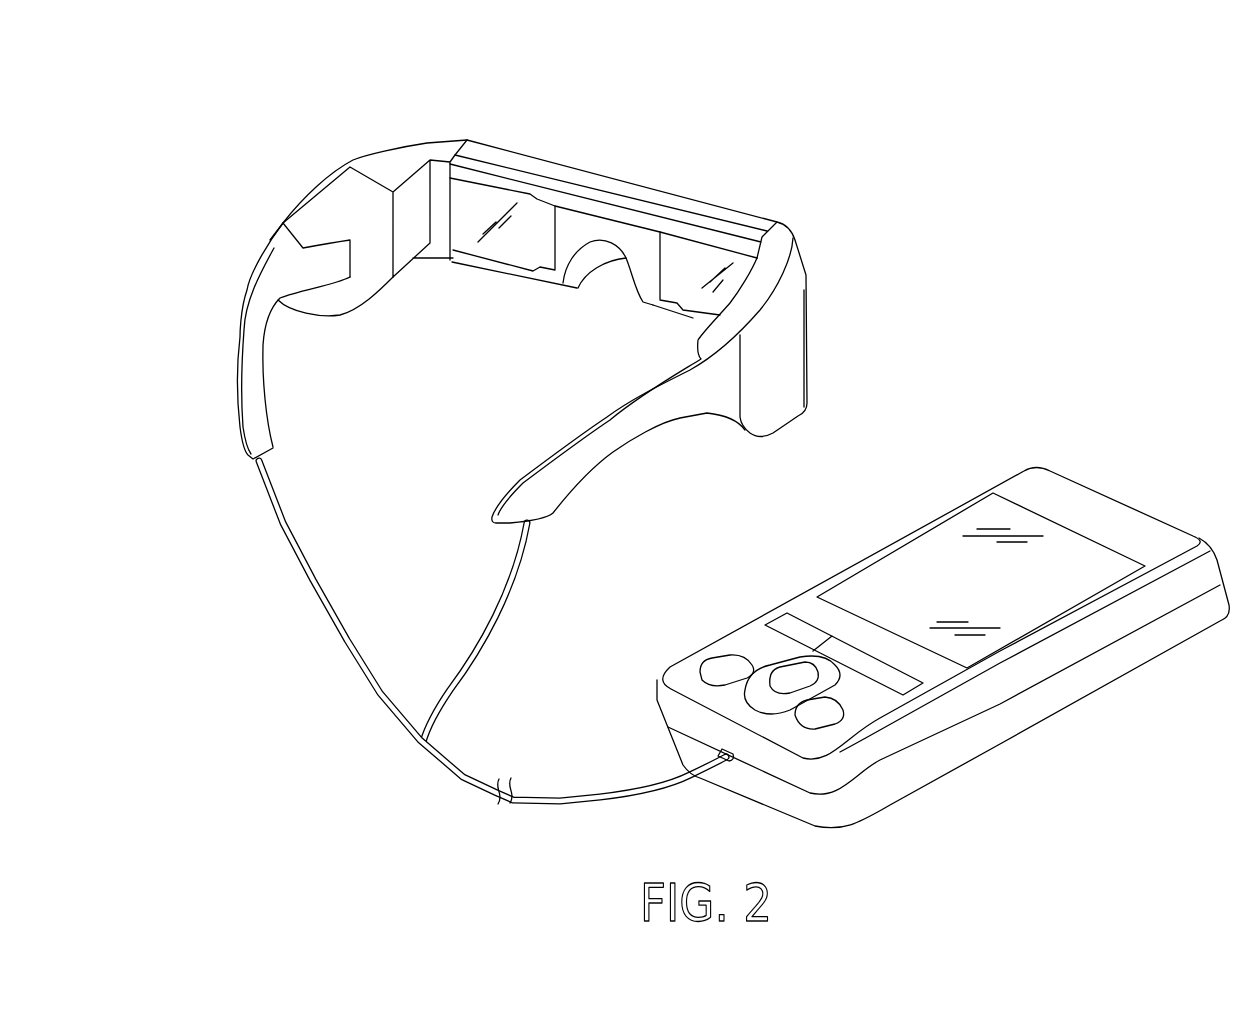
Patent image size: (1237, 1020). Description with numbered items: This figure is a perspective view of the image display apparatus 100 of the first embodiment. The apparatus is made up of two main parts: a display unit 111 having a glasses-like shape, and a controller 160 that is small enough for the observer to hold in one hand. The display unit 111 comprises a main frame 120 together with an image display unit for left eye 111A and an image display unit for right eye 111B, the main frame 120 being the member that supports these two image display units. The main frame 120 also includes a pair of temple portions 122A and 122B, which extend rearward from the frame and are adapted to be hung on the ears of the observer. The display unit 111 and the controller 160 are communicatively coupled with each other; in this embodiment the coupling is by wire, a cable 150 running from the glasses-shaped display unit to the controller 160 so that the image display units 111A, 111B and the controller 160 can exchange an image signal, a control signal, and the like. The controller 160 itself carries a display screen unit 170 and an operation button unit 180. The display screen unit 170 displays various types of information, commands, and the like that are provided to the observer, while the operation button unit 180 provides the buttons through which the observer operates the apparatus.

The image display apparatus 100 is at (936, 163).
The display unit 111 is at (813, 100).
The image display unit for left eye 111A is at (513, 137).
The image display unit for right eye 111B is at (740, 194).
The main frame 120 is at (391, 152).
The temple portion 122A is at (243, 292).
The temple portion 122B is at (623, 437).
The cable 150 is at (562, 797).
The controller 160 is at (1152, 485).
The display screen unit 170 is at (943, 557).
The operation button unit 180 is at (780, 574).